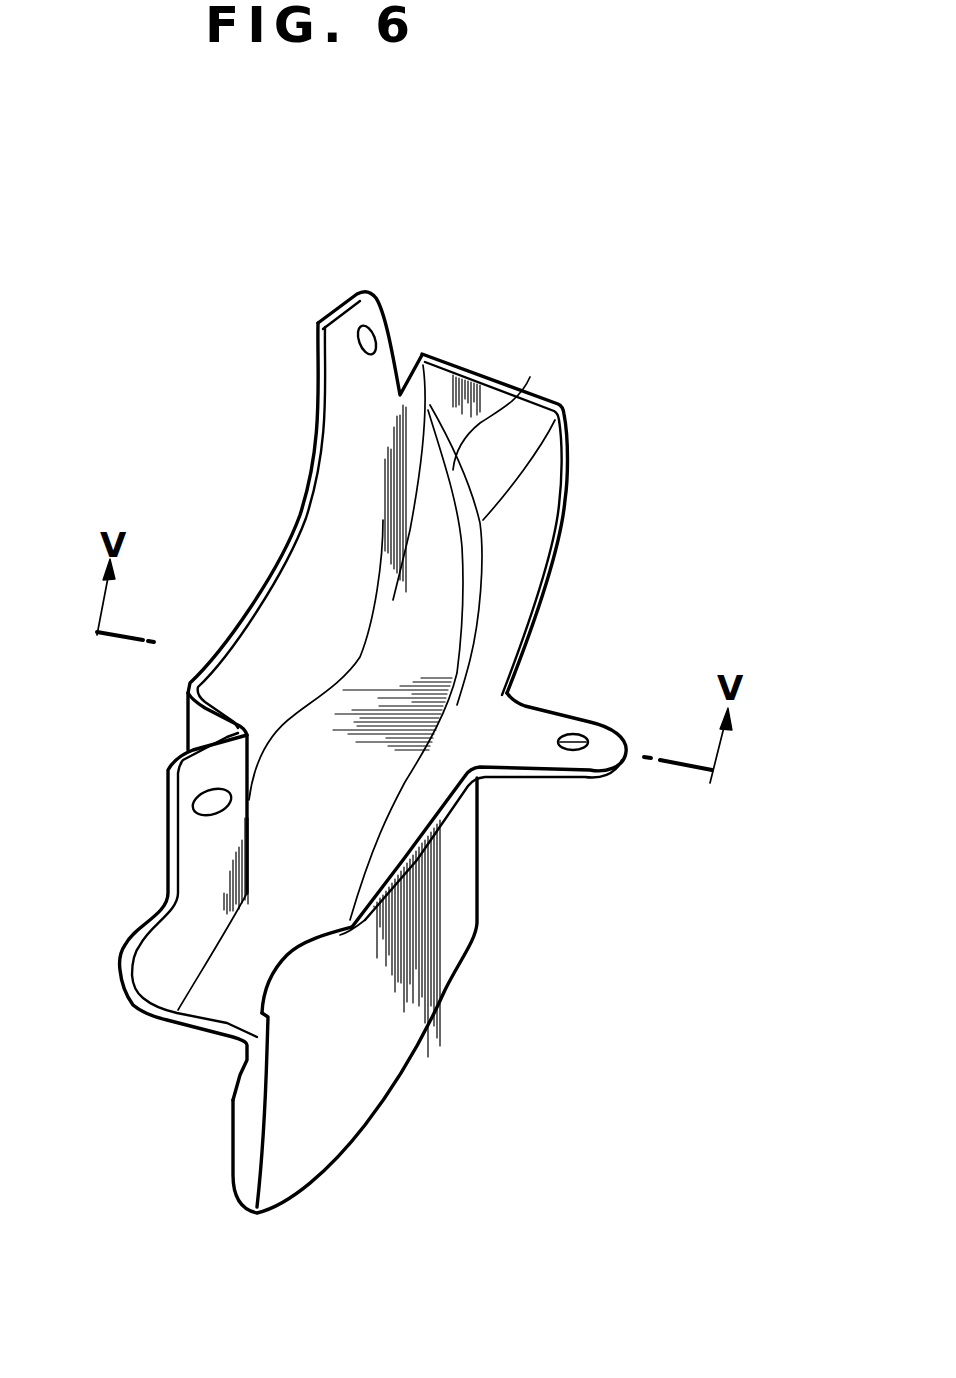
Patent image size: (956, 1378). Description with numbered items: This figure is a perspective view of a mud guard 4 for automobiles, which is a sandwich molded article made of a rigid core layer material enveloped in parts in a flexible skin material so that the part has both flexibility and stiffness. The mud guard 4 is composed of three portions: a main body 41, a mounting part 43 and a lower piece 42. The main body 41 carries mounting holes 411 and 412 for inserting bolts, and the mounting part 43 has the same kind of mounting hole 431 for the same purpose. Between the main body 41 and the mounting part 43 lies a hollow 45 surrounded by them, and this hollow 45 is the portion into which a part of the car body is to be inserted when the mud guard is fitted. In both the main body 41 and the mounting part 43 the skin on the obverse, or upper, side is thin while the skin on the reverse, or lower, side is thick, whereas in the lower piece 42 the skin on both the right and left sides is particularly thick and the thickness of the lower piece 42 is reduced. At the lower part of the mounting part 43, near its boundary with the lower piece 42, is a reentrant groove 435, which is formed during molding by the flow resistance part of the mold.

The mud guard 4 is at (632, 453).
The main body 41 is at (320, 545).
The mounting hole 411 is at (380, 333).
The mounting hole 412 is at (195, 802).
The lower piece 42 is at (387, 1072).
The mounting part 43 is at (500, 630).
The mounting hole 431 is at (575, 738).
The reentrant groove 435 is at (147, 1077).
The hollow 45 is at (333, 833).